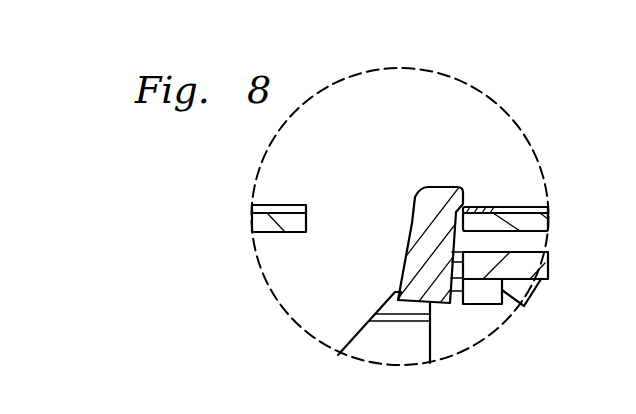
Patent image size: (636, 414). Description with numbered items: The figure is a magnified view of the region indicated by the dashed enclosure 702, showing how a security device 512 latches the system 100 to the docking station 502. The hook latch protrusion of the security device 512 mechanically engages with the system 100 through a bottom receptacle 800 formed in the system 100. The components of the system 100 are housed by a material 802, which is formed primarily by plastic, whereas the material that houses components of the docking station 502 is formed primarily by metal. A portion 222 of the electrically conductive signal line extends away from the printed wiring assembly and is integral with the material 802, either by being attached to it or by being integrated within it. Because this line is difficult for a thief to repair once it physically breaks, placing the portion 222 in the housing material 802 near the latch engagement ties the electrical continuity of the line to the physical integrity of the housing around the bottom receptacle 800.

The system 100 is at (291, 204).
The portion of line 222 is at (490, 206).
The docking station 502 is at (378, 309).
The security device 512 is at (450, 186).
The dashed enclosure 702 is at (521, 116).
The bottom receptacle 800 is at (354, 231).
The material 802 is at (306, 214).